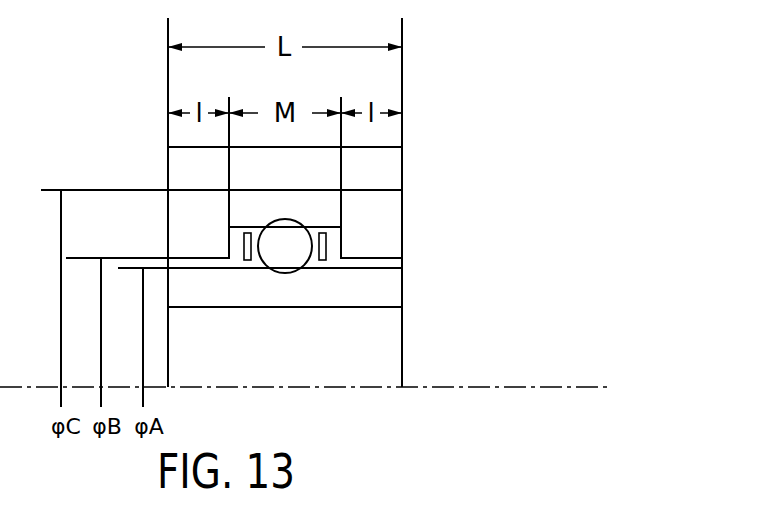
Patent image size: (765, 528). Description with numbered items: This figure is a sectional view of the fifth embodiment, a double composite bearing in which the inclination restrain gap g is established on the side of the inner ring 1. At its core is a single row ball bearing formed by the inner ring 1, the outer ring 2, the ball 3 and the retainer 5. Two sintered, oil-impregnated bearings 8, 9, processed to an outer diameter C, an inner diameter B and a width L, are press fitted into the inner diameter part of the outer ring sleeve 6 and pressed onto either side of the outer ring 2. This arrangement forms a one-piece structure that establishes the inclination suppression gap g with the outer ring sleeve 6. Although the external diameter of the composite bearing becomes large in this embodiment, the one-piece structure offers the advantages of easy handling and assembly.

The inner ring 1 is at (392, 300).
The outer ring 2 is at (294, 208).
The ball 3 is at (283, 265).
The retainer 5 is at (322, 260).
The outer ring sleeve 6 is at (186, 170).
The sintered, oil-impregnated bearing 8 is at (186, 233).
The sintered, oil-impregnated bearing 9 is at (386, 244).
The inclination restrain gap g is at (127, 267).